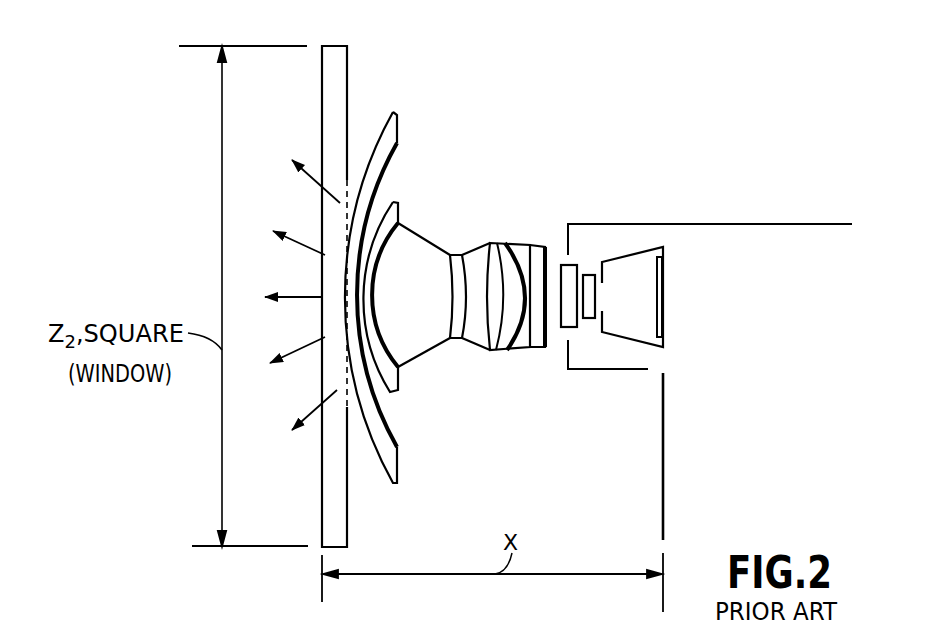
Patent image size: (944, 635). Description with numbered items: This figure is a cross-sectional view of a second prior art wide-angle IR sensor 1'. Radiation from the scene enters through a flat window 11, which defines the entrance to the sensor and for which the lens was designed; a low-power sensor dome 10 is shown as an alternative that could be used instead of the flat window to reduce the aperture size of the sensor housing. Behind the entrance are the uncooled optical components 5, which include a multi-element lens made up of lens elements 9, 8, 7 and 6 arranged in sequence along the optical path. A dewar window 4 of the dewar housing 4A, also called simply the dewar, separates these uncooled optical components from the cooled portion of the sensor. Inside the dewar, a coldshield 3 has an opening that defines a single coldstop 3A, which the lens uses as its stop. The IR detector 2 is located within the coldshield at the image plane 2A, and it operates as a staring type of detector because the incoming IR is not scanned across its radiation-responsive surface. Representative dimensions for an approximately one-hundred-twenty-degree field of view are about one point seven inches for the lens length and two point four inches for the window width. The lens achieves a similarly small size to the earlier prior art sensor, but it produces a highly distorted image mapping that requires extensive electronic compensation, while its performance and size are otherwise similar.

The window 11 is at (348, 62).
The sensor dome 10 is at (398, 122).
The lens element 9 is at (401, 227).
The lens element 8 is at (452, 255).
The lens element 7 is at (498, 243).
The lens element 6 is at (533, 245).
The uncooled optical components 5 is at (423, 367).
The dewar window 4 is at (573, 257).
The dewar housing 4A is at (697, 224).
The coldshield 3 is at (637, 254).
The coldstop 3A is at (595, 357).
The IR detector 2 is at (665, 281).
The image plane 2A is at (665, 420).
The sensor 1' is at (725, 162).